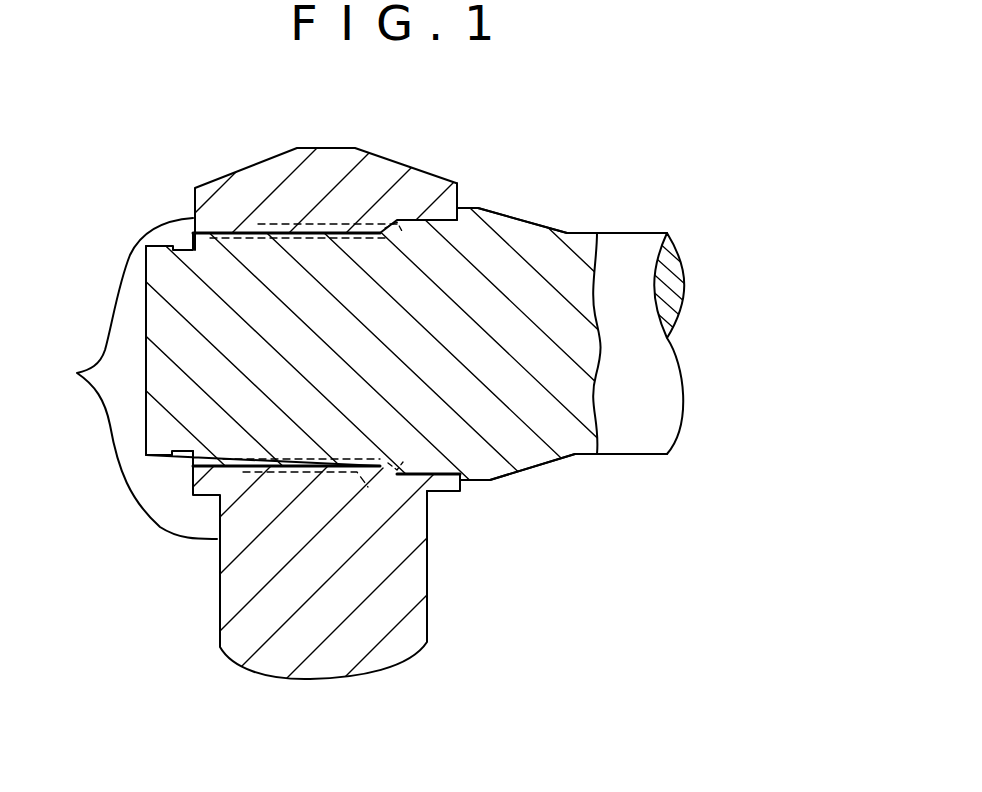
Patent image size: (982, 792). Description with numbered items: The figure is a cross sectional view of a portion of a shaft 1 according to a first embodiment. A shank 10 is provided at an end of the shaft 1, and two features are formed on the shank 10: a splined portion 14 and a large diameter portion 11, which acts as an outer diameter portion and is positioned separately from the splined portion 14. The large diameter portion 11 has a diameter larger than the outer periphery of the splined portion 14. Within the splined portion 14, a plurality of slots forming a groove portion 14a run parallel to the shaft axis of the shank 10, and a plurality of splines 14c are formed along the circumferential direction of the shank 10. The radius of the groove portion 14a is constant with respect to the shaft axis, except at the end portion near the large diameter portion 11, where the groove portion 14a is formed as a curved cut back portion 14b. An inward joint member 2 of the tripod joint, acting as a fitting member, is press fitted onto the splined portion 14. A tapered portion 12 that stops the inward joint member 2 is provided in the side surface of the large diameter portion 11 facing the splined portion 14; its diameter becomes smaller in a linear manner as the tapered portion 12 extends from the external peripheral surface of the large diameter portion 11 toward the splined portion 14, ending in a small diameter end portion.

The shaft 1 is at (698, 154).
The inward joint member 2 is at (134, 378).
The shank 10 is at (560, 231).
The large diameter portion 11 is at (477, 209).
The tapered portion 12 is at (457, 184).
The splined portion 14 is at (260, 225).
The groove portion 14a is at (327, 233).
The cut back portion 14b is at (387, 226).
The splines 14c is at (297, 225).